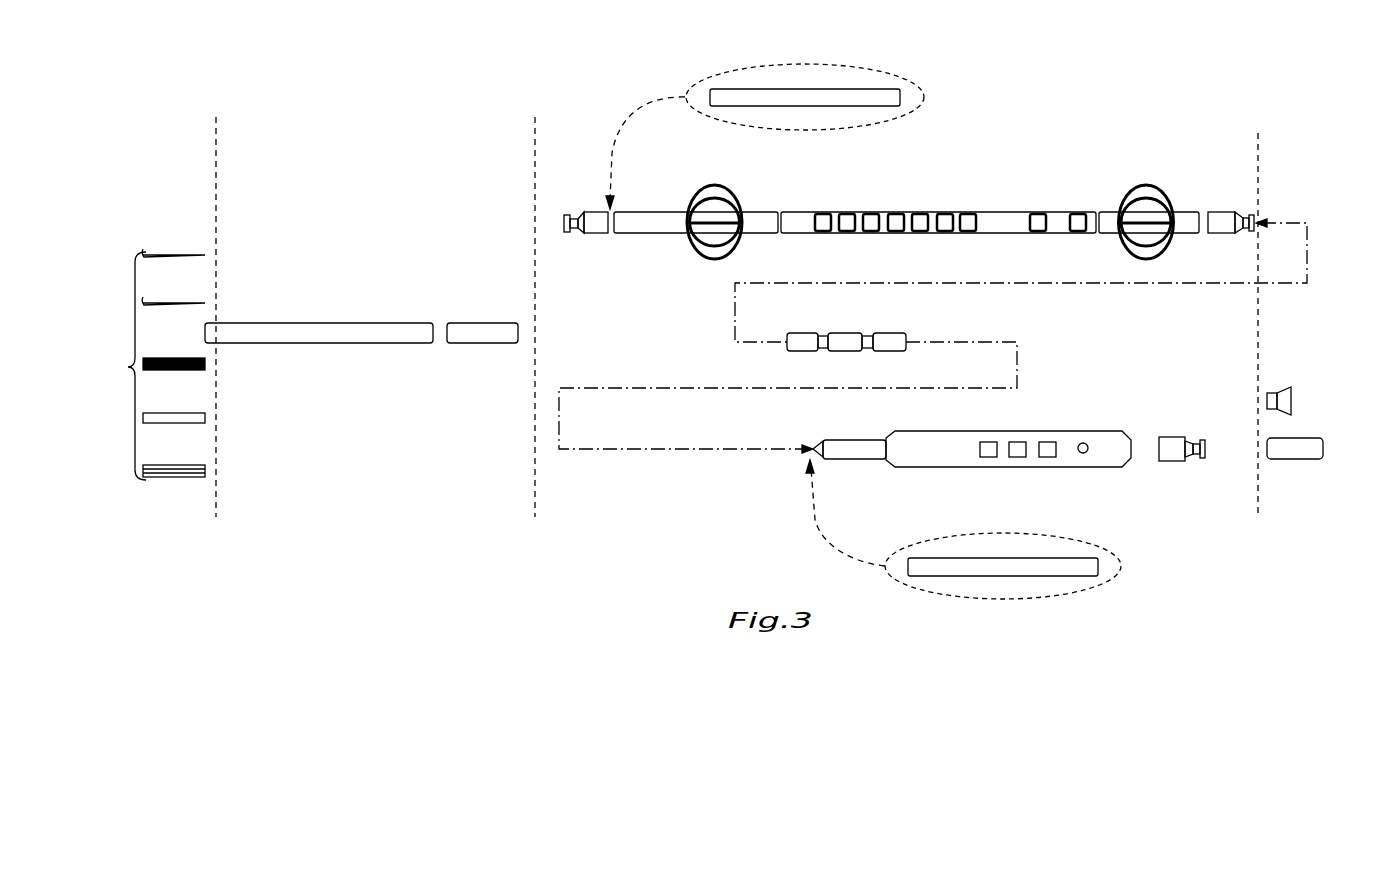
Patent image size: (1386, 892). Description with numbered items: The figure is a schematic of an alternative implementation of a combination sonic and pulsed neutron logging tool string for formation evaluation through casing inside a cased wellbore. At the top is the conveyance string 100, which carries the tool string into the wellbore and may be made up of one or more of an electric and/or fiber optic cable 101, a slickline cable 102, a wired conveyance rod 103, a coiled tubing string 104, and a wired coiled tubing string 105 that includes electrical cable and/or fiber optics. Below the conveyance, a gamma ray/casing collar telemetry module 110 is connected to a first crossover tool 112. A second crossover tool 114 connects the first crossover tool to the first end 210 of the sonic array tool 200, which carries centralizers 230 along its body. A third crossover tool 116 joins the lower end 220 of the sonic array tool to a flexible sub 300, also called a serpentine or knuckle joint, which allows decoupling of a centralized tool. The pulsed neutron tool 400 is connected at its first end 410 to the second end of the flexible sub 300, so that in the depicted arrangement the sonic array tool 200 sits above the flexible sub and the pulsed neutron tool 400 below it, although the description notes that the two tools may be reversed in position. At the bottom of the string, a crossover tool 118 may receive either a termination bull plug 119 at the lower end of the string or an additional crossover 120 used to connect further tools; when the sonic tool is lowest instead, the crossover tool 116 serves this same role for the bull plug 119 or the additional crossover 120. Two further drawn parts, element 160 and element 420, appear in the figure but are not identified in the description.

The conveyance string 100 is at (120, 366).
The electric and/or fiber optic cable 101 is at (183, 255).
The slickline cable 102 is at (183, 303).
The wired conveyance rod 103 is at (183, 370).
The coiled tubing string 104 is at (183, 423).
The wired coiled tubing string 105 is at (183, 477).
The gamma ray/casing collar telemetry module 110 is at (300, 323).
The first crossover tool 112 is at (485, 323).
The second crossover tool 114 is at (595, 212).
The third crossover tool 116 is at (1222, 212).
The crossover tool 118 is at (1178, 437).
The termination bull plug 119 is at (1283, 388).
The additional crossover 120 is at (1307, 438).
The insert strip 160 is at (830, 95).
The sonic array tool 200 is at (763, 212).
The first end 210 is at (636, 212).
The lower end 220 is at (1183, 212).
The centralizers 230 is at (712, 260).
The flexible sub 300 is at (890, 333).
The pulsed neutron tool 400 is at (1008, 419).
The first end 410 is at (857, 459).
The handle panel 420 is at (1096, 431).